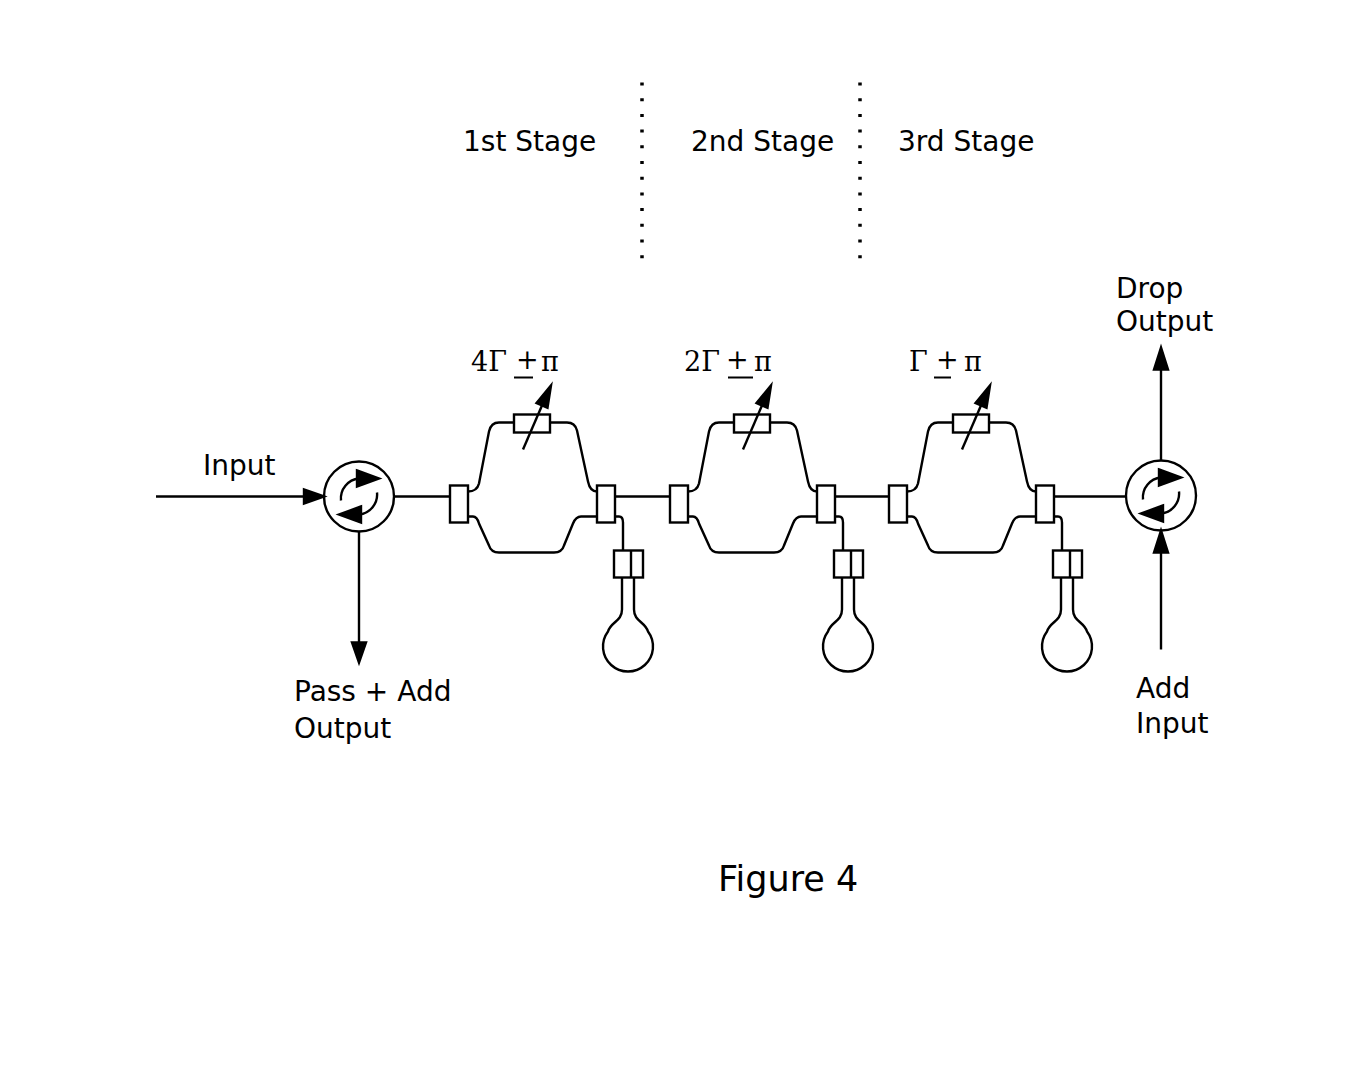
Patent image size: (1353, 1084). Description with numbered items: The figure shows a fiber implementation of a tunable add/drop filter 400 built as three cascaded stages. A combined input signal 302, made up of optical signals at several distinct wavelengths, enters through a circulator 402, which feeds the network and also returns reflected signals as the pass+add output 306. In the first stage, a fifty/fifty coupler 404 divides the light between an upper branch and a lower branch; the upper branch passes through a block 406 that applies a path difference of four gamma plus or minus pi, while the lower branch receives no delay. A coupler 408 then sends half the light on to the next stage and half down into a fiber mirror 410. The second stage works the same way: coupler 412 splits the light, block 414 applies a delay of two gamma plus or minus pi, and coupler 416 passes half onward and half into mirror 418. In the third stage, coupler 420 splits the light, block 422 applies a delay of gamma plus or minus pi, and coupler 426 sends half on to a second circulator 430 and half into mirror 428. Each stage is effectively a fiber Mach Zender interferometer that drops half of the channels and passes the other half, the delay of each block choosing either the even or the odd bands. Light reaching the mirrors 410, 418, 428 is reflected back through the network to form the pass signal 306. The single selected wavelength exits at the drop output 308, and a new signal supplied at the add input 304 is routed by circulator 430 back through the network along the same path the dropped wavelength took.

The network input 302 is at (240, 521).
The add input port 304 is at (1203, 590).
The pass+add port 306 is at (328, 597).
The drop output port 308 is at (1193, 404).
The filter 400 is at (800, 543).
The circulator 402 is at (387, 470).
The coupler 404 is at (449, 489).
The block 406 is at (552, 418).
The coupler 408 is at (613, 489).
The fiber mirror 410 is at (650, 632).
The coupler 412 is at (682, 465).
The block 414 is at (797, 385).
The coupler 416 is at (843, 479).
The fiber mirror 418 is at (887, 623).
The coupler 420 is at (889, 465).
The block 422 is at (1011, 383).
The coupler 426 is at (1067, 483).
The fiber mirror 428 is at (1028, 611).
The circulator 430 is at (1197, 468).